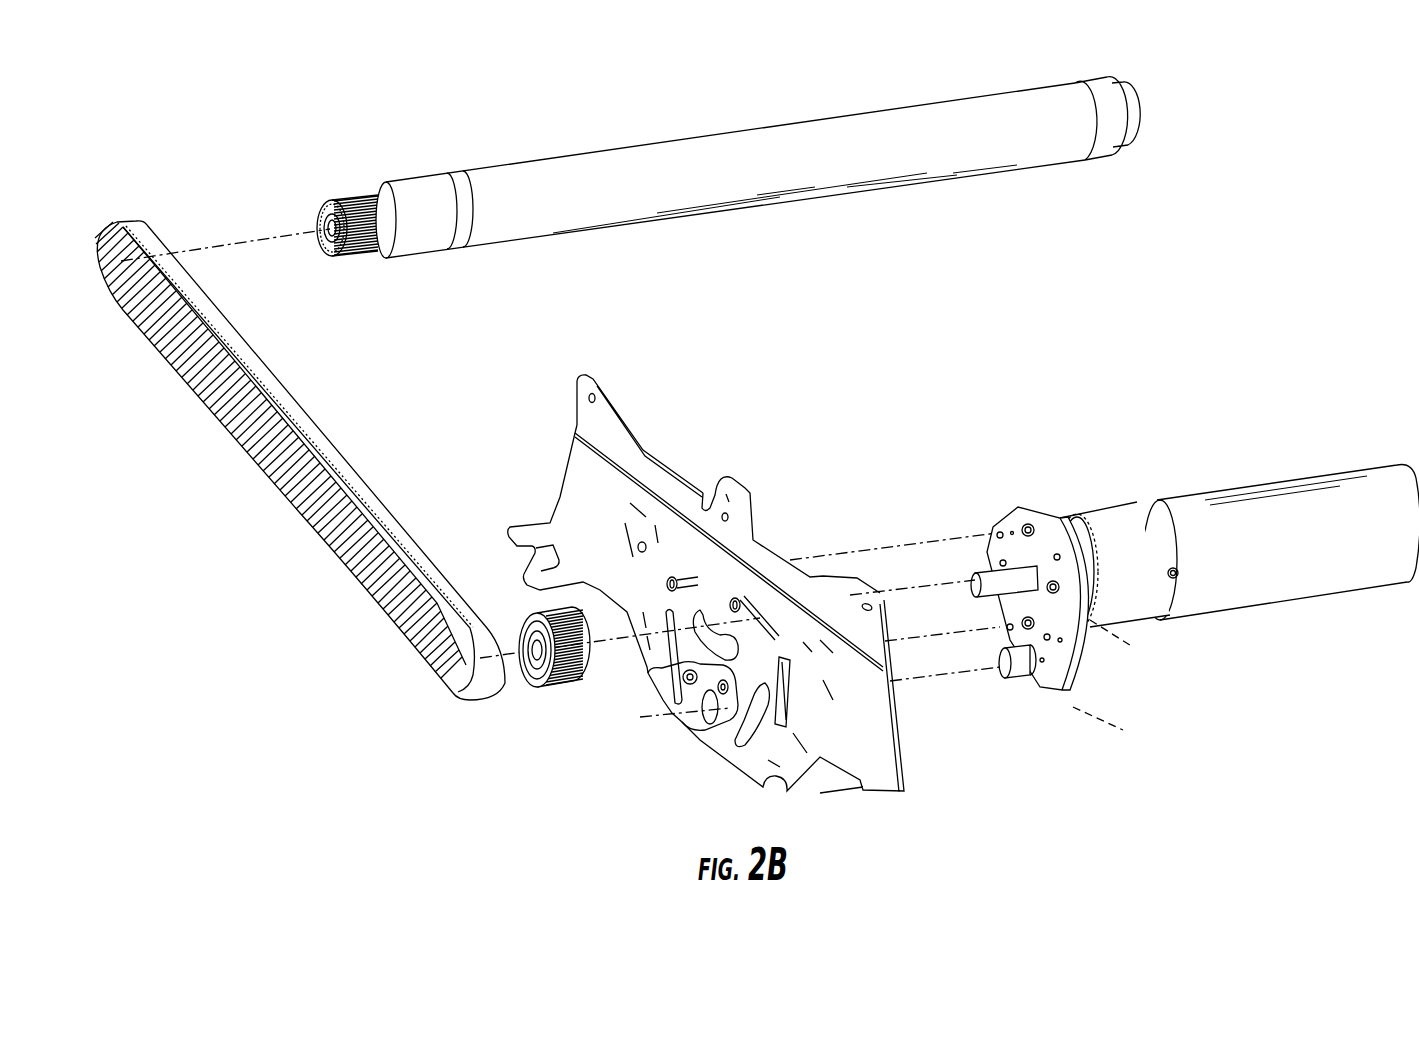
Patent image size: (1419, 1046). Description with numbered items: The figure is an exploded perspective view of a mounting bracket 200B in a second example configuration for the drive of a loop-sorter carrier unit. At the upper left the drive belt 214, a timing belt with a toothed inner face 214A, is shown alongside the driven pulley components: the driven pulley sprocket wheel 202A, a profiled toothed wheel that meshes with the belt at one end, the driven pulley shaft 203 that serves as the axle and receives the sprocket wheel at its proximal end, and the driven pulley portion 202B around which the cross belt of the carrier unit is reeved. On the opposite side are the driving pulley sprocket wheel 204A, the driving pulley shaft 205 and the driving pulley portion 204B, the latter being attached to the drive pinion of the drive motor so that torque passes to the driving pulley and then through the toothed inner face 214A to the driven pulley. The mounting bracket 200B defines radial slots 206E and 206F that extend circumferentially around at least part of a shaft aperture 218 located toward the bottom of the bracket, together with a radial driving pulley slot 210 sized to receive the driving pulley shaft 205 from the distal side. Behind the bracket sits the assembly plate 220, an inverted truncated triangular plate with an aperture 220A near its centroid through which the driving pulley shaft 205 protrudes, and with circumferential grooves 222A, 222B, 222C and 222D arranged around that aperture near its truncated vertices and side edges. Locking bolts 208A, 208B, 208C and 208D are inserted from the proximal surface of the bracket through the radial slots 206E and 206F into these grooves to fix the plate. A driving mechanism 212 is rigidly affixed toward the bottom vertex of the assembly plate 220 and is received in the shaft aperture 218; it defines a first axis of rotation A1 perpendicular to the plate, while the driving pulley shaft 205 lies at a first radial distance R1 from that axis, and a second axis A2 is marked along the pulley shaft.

The mounting bracket 200B is at (696, 590).
The driven pulley sprocket wheel 202A is at (292, 154).
The driven pulley portion 202B is at (748, 150).
The driven pulley shaft 203 is at (316, 229).
The driving pulley sprocket wheel 204A is at (554, 707).
The driving pulley portion 204B is at (1279, 587).
The driving pulley shaft 205 is at (956, 566).
The radial slot 206E is at (731, 591).
The radial slot 206F is at (684, 676).
The locking bolt 208A is at (664, 578).
The locking bolt 208B is at (751, 593).
The locking bolt 208C is at (683, 686).
The locking bolt 208D is at (727, 711).
The radial driving pulley slot 210 is at (709, 600).
The driving mechanism 212 is at (1021, 690).
The drive belt 214 is at (136, 232).
The toothed inner face 214A is at (128, 320).
The shaft aperture 218 is at (705, 725).
The assembly plate 220 is at (1040, 552).
The aperture 220A is at (1039, 551).
The circumferential groove 222A is at (1012, 494).
The circumferential groove 222B is at (1071, 553).
The circumferential groove 222C is at (996, 629).
The circumferential groove 222D is at (1060, 659).
The first axis of rotation A1 is at (679, 722).
The second axis A2 is at (918, 576).
The first radial distance R1 is at (1107, 630).